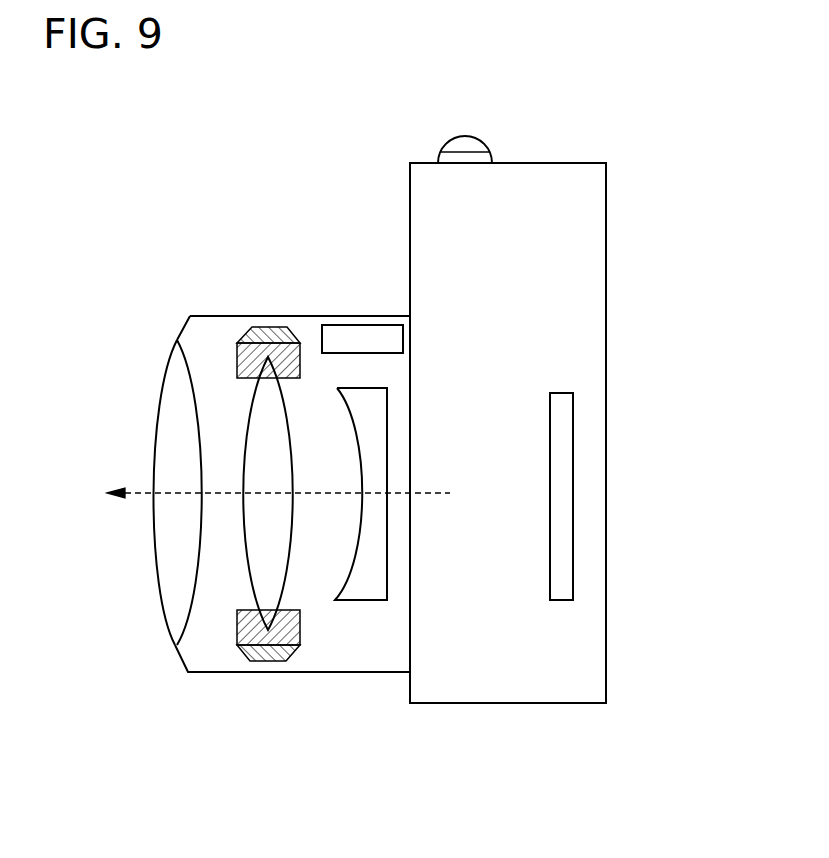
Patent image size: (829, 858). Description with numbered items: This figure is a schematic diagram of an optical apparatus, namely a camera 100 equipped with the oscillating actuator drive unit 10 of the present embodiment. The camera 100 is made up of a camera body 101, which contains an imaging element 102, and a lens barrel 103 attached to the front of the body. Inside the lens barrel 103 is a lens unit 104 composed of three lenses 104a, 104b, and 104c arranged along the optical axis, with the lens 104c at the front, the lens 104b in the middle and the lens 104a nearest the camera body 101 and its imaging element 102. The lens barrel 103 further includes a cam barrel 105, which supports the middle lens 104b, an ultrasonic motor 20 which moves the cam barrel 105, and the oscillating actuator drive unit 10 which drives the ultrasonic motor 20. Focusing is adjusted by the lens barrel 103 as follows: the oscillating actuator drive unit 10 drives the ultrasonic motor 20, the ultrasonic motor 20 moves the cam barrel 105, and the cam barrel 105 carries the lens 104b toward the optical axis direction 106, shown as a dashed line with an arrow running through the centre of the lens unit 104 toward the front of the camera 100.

The camera 100 is at (292, 123).
The camera body 101 is at (606, 248).
The imaging element 102 is at (573, 473).
The lens barrel 103 is at (313, 316).
The oscillating actuator drive unit 10 is at (367, 340).
The cam barrel 105 is at (237, 357).
The ultrasonic motor 20 is at (262, 330).
The lens unit 104 is at (266, 591).
The lens 104a is at (374, 587).
The lens 104b is at (255, 568).
The lens 104c is at (170, 608).
The optical axis direction 106 is at (427, 493).